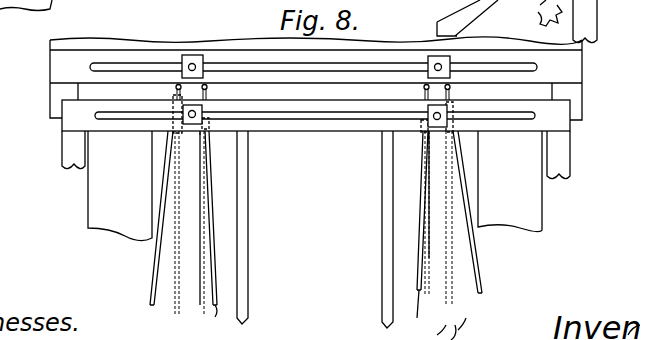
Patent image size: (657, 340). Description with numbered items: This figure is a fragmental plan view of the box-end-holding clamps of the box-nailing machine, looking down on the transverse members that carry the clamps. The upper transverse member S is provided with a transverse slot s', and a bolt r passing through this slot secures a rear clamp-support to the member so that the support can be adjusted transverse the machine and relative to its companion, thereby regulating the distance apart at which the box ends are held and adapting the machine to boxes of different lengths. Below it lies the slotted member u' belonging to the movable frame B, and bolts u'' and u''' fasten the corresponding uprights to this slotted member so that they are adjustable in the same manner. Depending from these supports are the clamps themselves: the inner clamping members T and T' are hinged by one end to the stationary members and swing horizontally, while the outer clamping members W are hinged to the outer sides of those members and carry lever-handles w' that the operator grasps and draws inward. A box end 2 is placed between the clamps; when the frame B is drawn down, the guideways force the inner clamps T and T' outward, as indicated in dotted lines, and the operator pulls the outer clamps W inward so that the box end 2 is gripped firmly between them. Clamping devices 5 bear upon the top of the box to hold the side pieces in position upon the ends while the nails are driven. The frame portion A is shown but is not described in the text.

The transverse member S is at (316, 78).
The transverse slot s' is at (313, 82).
The slotted member u' is at (316, 128).
The bolt u'' is at (451, 107).
The bolt u''' is at (204, 107).
The bolt r is at (177, 55).
The movable frame B is at (568, 143).
The frame block A is at (542, 208).
The clamping device 5 is at (247, 268).
The outer clamping member W is at (155, 251).
The lever-handle w' is at (318, 218).
The box end 2 is at (200, 277).
The inner clamping member T is at (416, 314).
The inner clamping member T' is at (214, 321).